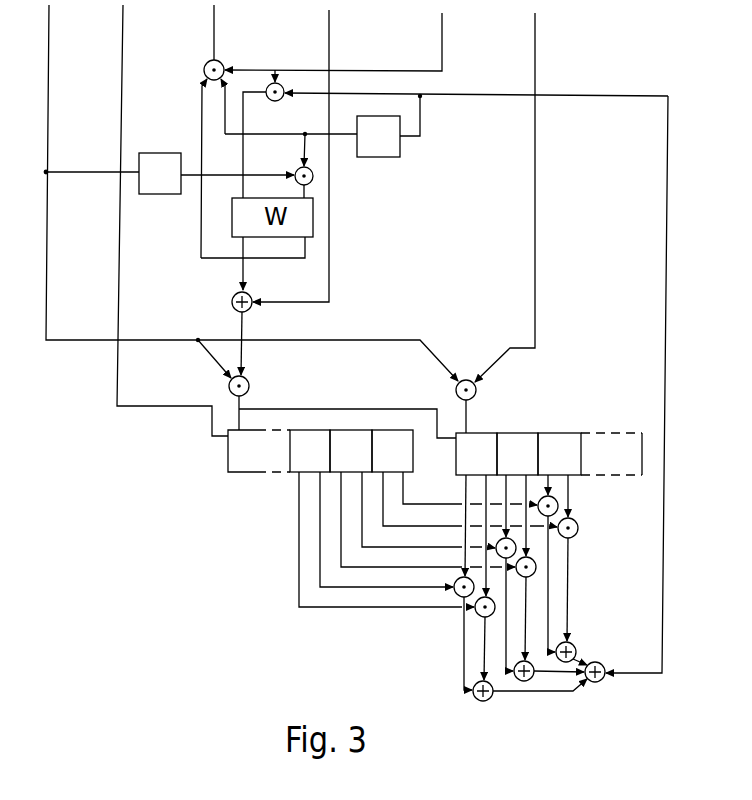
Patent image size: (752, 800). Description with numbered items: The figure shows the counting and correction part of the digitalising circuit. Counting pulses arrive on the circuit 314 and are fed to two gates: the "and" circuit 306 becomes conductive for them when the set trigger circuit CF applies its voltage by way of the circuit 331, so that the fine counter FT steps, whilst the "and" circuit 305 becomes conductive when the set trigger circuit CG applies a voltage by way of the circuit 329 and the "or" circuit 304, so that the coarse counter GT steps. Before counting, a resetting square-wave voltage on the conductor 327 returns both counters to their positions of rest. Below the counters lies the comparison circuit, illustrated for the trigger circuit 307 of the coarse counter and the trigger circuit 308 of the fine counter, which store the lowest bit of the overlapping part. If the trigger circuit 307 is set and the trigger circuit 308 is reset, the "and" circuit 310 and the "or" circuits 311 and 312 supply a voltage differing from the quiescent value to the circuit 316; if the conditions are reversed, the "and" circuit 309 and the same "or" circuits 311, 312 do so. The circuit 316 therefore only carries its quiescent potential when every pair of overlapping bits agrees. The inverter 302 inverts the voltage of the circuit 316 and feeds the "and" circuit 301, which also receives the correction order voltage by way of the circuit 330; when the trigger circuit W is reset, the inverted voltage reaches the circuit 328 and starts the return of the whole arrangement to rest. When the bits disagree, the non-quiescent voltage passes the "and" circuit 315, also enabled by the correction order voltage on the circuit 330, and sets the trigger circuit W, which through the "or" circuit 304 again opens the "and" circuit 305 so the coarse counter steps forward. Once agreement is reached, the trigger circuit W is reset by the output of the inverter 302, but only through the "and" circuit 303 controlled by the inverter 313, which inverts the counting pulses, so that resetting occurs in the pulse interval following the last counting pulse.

The "and" circuit 301 is at (266, 158).
The inverter 302 is at (389, 125).
The "and" circuit 303 is at (290, 166).
The "or" circuit 304 is at (224, 332).
The "and" circuit 305 is at (342, 406).
The "and" circuit 306 is at (449, 405).
The trigger circuit 307 is at (392, 518).
The trigger circuit 308 is at (549, 514).
The "and" circuit 309 is at (558, 505).
The "and" circuit 310 is at (582, 578).
The "or" circuit 311 is at (580, 651).
The "or" circuit 312 is at (607, 682).
The inverter 313 is at (169, 173).
The circuit 314 is at (252, 193).
The "and" circuit 315 is at (266, 180).
The circuit 316 is at (476, 383).
The conductor 327 is at (172, 220).
The circuit 328 is at (231, 32).
The circuit 329 is at (308, 156).
The circuit 330 is at (350, 42).
The circuit 331 is at (521, 197).